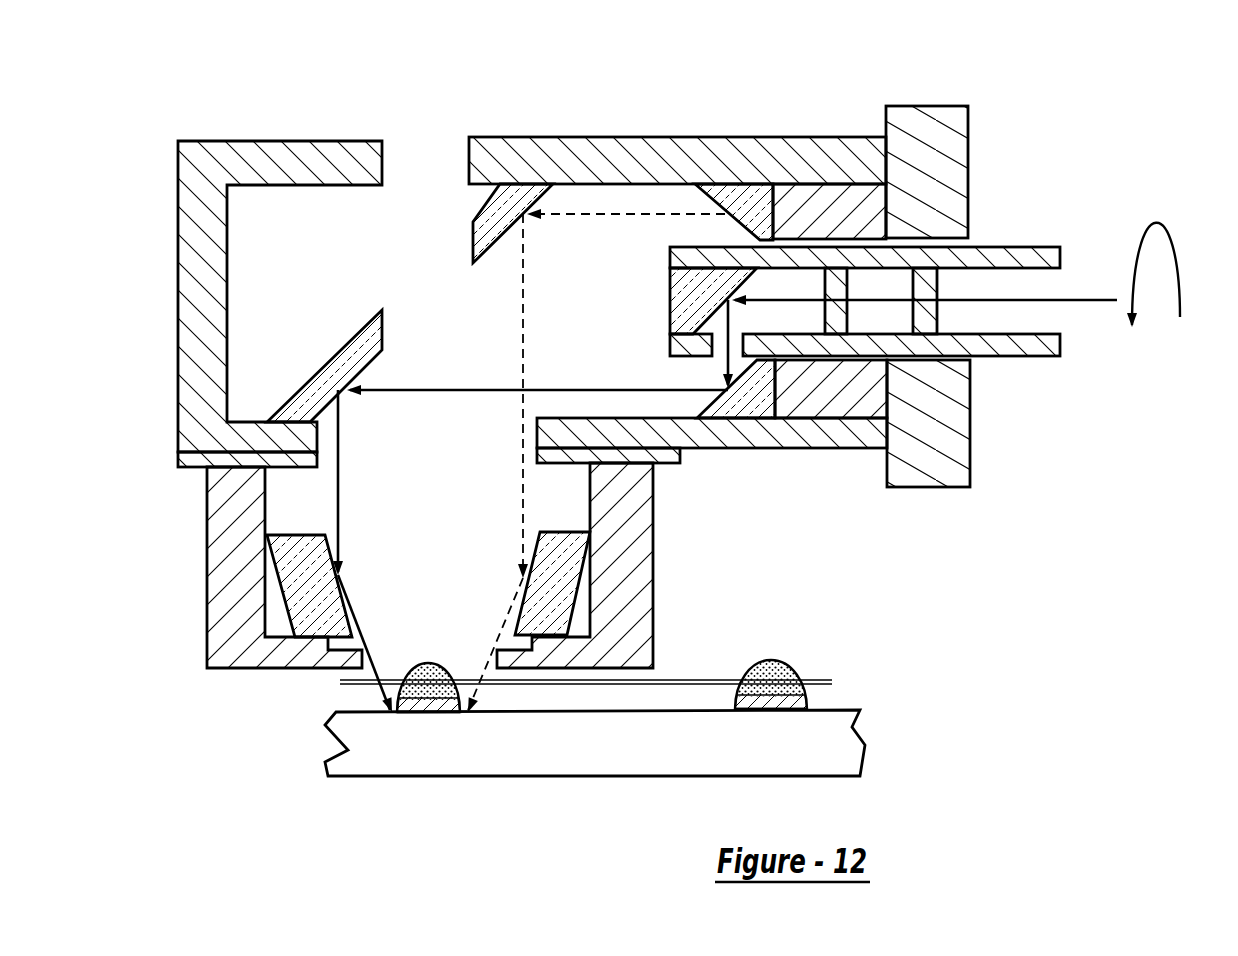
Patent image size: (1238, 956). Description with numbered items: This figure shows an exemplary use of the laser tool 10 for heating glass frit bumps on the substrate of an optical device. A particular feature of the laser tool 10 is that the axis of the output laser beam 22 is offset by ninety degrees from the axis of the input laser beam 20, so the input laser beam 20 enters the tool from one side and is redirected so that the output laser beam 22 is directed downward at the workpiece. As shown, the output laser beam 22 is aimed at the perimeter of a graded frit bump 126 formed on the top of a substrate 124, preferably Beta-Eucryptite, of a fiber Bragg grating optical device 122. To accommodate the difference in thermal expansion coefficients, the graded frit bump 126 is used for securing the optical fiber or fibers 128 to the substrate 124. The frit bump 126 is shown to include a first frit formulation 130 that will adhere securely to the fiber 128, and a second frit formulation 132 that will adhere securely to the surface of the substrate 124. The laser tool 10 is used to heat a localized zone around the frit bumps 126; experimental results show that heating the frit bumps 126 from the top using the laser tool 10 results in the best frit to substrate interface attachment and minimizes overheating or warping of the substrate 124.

The laser tool 10 is at (1040, 118).
The input laser beam 20 is at (1077, 300).
The output laser beam 22 is at (362, 657).
The fiber Bragg grating optical device 122 is at (575, 725).
The substrate 124 is at (833, 745).
The graded frit bump 126 is at (373, 695).
The optical fiber 128 is at (683, 676).
The first frit formulation 130 is at (426, 663).
The second frit formulation 132 is at (437, 700).